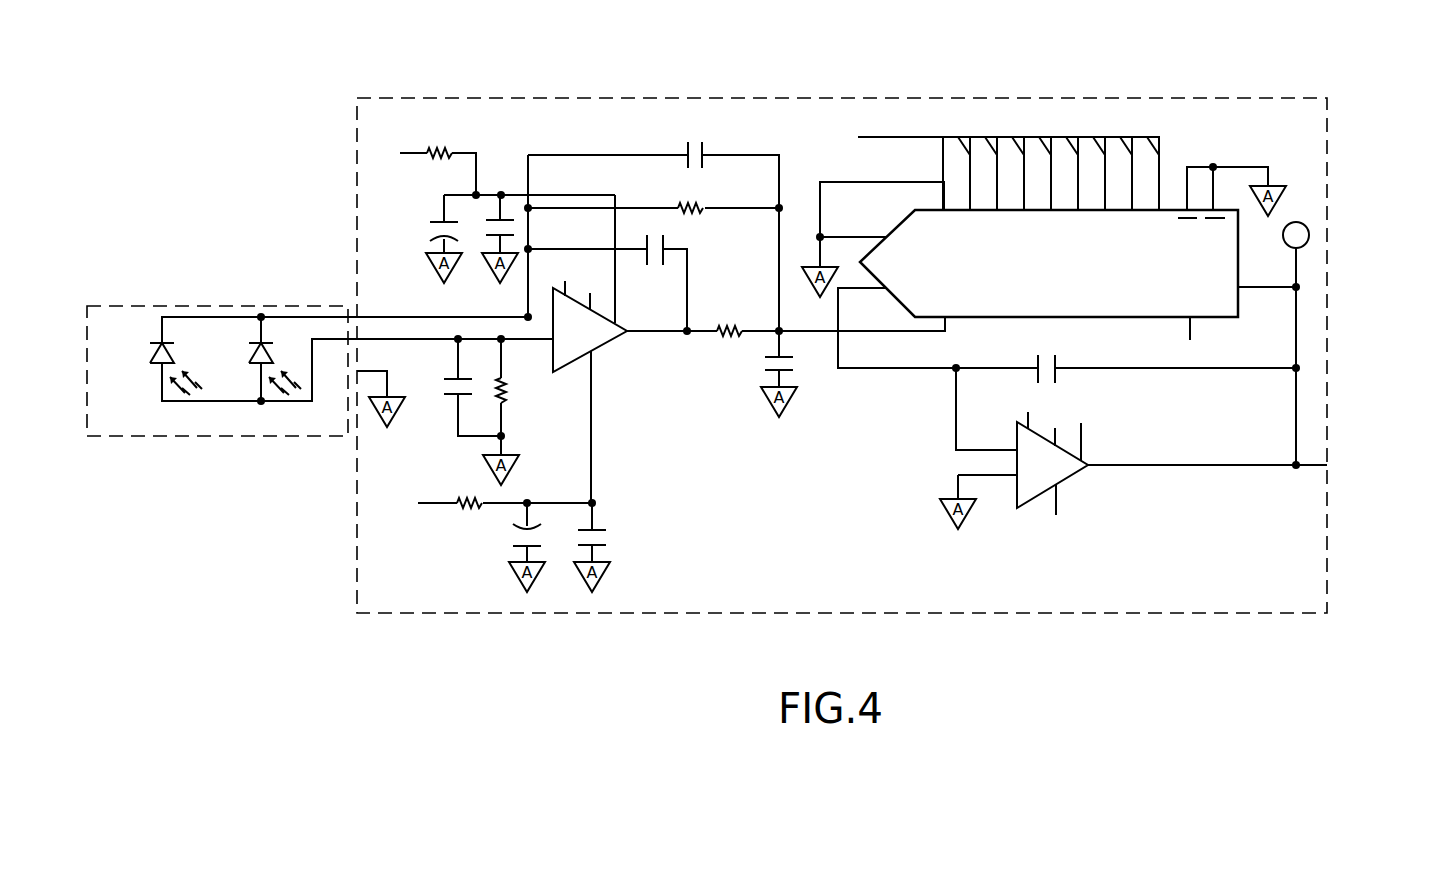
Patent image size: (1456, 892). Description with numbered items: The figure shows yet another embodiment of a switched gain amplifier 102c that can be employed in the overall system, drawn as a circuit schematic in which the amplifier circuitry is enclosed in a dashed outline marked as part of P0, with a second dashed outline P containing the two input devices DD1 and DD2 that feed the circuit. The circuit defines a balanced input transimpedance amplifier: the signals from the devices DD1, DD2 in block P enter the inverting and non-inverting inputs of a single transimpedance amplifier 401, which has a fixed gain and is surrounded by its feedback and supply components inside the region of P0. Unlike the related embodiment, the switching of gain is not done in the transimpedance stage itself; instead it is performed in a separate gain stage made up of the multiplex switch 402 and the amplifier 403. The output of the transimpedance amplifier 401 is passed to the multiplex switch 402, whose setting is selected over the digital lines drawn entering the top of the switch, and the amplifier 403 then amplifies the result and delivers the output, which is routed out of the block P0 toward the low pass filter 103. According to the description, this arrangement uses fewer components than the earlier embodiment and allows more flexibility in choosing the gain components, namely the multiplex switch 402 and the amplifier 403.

The part of P0 circuit board P0 is at (633, 98).
The photodiode package P is at (132, 437).
The photodiode DD1 is at (247, 349).
The photodiode DD2 is at (152, 350).
The switched gain amplifier 102c is at (591, 138).
The transimpedance amplifier 401 is at (600, 345).
The multiplex switch 402 is at (1240, 240).
The amplifier 403 is at (1073, 474).
The low pass filter 103 is at (1385, 464).